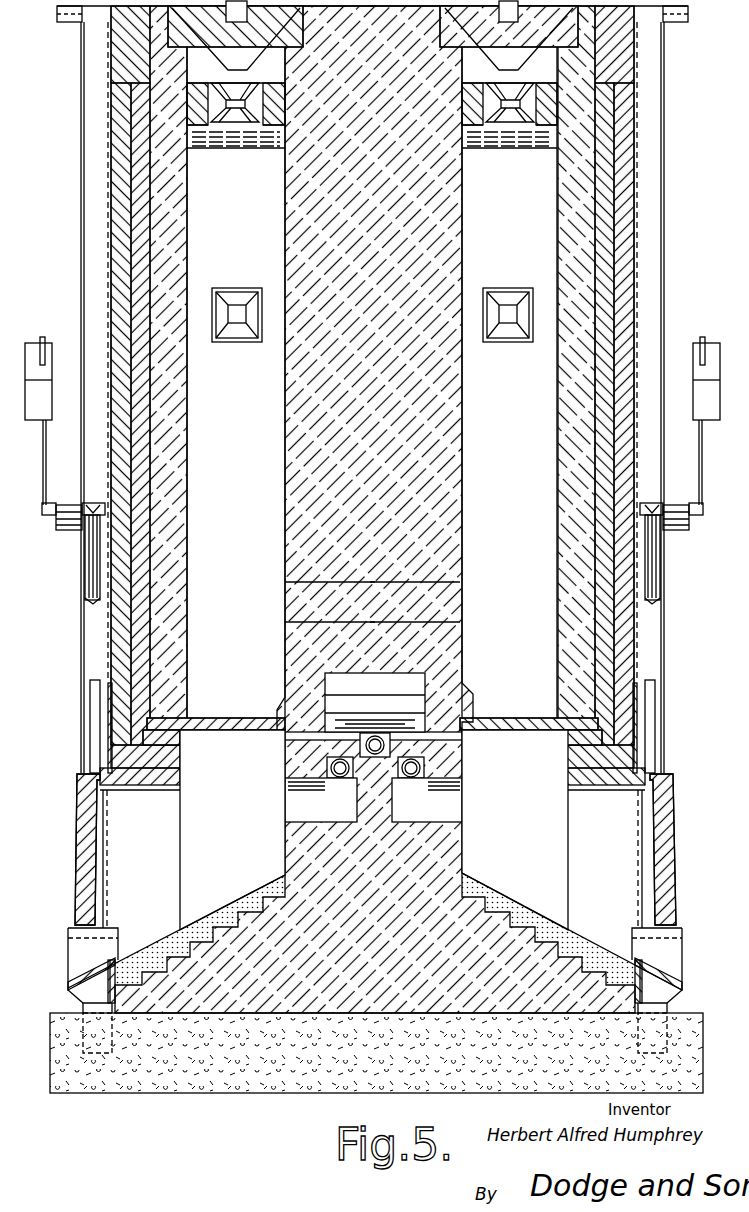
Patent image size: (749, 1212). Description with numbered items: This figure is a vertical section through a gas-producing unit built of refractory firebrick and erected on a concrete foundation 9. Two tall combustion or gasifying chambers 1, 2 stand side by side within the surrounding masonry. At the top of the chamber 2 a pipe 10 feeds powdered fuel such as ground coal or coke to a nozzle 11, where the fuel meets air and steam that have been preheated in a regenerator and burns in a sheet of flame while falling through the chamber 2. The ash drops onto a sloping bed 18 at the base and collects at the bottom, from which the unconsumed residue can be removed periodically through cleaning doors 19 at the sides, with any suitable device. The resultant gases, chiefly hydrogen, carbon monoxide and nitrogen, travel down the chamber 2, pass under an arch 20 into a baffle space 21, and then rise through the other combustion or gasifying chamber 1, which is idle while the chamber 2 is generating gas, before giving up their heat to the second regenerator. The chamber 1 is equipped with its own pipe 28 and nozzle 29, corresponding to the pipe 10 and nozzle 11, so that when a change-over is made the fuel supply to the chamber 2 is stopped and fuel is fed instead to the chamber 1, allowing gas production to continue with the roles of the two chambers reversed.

The combustion or gasifying chamber 1 is at (509, 382).
The combustion or gasifying chamber 2 is at (236, 382).
The concrete foundation 9 is at (186, 1070).
The pipe 10 is at (241, 18).
The nozzle 11 is at (240, 110).
The sloping bed 18 is at (240, 900).
The cleaning doors 19 is at (78, 834).
The arch 20 is at (294, 783).
The baffle space 21 is at (335, 742).
The pipe 28 is at (510, 14).
The nozzle 29 is at (510, 112).